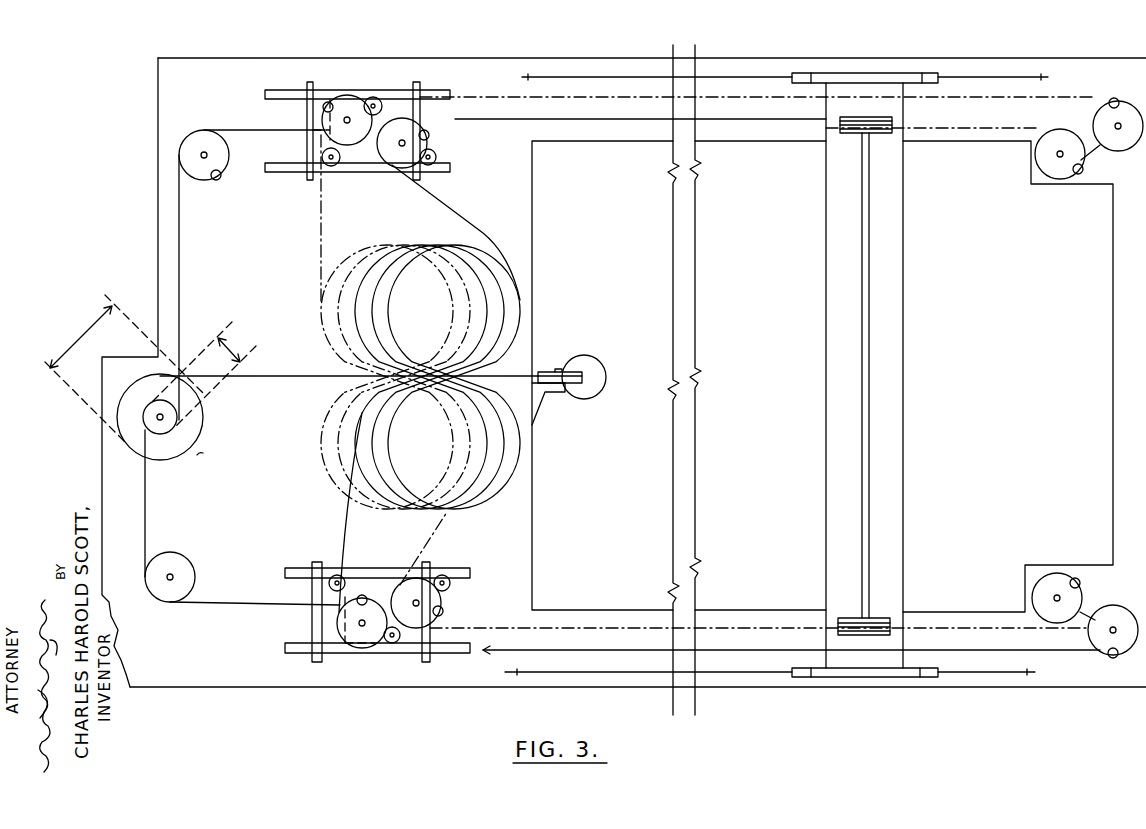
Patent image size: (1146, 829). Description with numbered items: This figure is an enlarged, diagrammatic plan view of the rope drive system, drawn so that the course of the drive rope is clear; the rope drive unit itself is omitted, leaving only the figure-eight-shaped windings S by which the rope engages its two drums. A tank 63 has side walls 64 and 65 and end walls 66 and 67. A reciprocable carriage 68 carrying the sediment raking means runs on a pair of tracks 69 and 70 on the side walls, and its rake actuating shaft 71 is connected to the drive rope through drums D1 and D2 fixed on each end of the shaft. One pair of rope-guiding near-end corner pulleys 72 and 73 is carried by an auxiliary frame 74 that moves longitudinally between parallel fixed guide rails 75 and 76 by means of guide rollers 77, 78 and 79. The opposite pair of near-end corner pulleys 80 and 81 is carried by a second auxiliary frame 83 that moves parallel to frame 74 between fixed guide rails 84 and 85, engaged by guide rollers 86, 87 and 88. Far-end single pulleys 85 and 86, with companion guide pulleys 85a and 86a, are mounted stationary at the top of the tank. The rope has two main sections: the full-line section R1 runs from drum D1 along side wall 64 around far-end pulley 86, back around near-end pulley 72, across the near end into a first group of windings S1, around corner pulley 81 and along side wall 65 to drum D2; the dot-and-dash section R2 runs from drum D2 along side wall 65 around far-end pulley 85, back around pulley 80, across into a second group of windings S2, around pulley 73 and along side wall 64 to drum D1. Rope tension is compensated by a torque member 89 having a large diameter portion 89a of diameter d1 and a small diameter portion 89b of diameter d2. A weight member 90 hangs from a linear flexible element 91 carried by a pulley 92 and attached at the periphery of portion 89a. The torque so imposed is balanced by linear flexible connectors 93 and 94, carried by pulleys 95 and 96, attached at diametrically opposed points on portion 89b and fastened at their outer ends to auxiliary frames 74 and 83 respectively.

The tank 63 is at (622, 58).
The side wall 64 is at (1005, 688).
The side wall 65 is at (825, 73).
The end wall 66 is at (1113, 380).
The end wall 67 is at (532, 212).
The reciprocable carriage 68 is at (903, 378).
The track 69 is at (768, 672).
The track 70 is at (722, 77).
The rake actuating shaft 71 is at (869, 288).
The near-end corner pulley 72 is at (365, 598).
The near-end corner pulley 73 is at (441, 610).
The auxiliary frame 74 is at (340, 608).
The guide rail 75 is at (333, 654).
The guide rail 76 is at (302, 568).
The guide roller 77 is at (392, 645).
The guide roller 78 is at (452, 585).
The guide roller 79 is at (329, 585).
The near-end corner pulley 80 is at (350, 95).
The near-end corner pulley 81 is at (425, 141).
The auxiliary frame 83 is at (323, 127).
The guide rail 84 is at (405, 92).
The guide rail / far-end single pulley 85 is at (1118, 101).
The companion guide pulley 85a is at (1082, 165).
The guide roller / far-end single pulley 86 is at (1110, 655).
The companion guide pulley 86a is at (1080, 588).
The guide roller 87 is at (335, 166).
The guide roller 88 is at (437, 157).
The torque member 89 is at (212, 424).
The large diameter portion 89a is at (178, 458).
The small diameter portion 89b is at (152, 400).
The weight member 90 is at (604, 377).
The linear flexible element 91 is at (495, 376).
The pulley 92 is at (548, 372).
The linear flexible connector 93 is at (145, 490).
The linear flexible connector 94 is at (180, 268).
The pulley 95 is at (175, 562).
The pulley 96 is at (218, 178).
The 8-shaped windings S is at (458, 244).
The first group of 8-shaped rope windings S1 is at (475, 512).
The second group of 8-shaped rope windings S2 is at (410, 512).
The large diameter d1 is at (125, 368).
The small diameter d2 is at (203, 374).
The component rope section R1 is at (483, 651).
The component rope section R2 is at (489, 88).
The drum D1 is at (869, 618).
The drum D2 is at (872, 133).